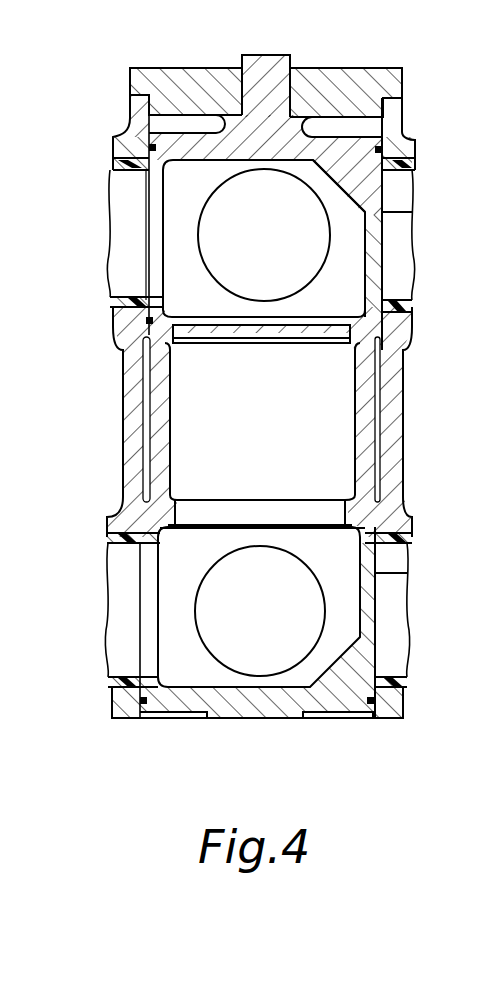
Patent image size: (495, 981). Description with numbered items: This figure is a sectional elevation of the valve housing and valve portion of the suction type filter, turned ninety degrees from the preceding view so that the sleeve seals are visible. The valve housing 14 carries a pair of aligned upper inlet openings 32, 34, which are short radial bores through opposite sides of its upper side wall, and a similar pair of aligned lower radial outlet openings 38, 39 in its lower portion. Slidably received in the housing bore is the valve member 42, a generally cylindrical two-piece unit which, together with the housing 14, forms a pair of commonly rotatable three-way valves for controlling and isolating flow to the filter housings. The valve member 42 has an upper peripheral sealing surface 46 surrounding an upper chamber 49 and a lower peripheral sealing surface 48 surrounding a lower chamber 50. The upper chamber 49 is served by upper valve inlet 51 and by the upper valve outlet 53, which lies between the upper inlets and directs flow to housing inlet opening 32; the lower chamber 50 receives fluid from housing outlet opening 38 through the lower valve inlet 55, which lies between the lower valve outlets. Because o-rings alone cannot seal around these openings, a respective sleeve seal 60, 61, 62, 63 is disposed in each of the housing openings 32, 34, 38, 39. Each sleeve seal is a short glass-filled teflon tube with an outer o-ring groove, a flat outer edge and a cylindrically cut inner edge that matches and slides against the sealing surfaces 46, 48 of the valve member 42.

The valve housing 14 is at (136, 108).
The valve member 42 is at (377, 131).
The upper inlet opening 32 is at (112, 168).
The upper inlet opening 34 is at (415, 171).
The upper peripheral sealing surface 46 is at (384, 244).
The upper chamber 49 is at (360, 265).
The upper valve outlet 53 is at (153, 297).
The sleeve seal 60 is at (133, 302).
The sleeve seal 61 is at (413, 305).
The upper valve inlet 51 is at (213, 278).
The sleeve seal 62 is at (107, 541).
The sleeve seal 63 is at (413, 538).
The lower valve inlet 55 is at (152, 543).
The lower peripheral sealing surface 48 is at (377, 573).
The lower chamber 50 is at (357, 614).
The lower radial outlet opening 38 is at (128, 681).
The lower radial outlet opening 39 is at (408, 681).